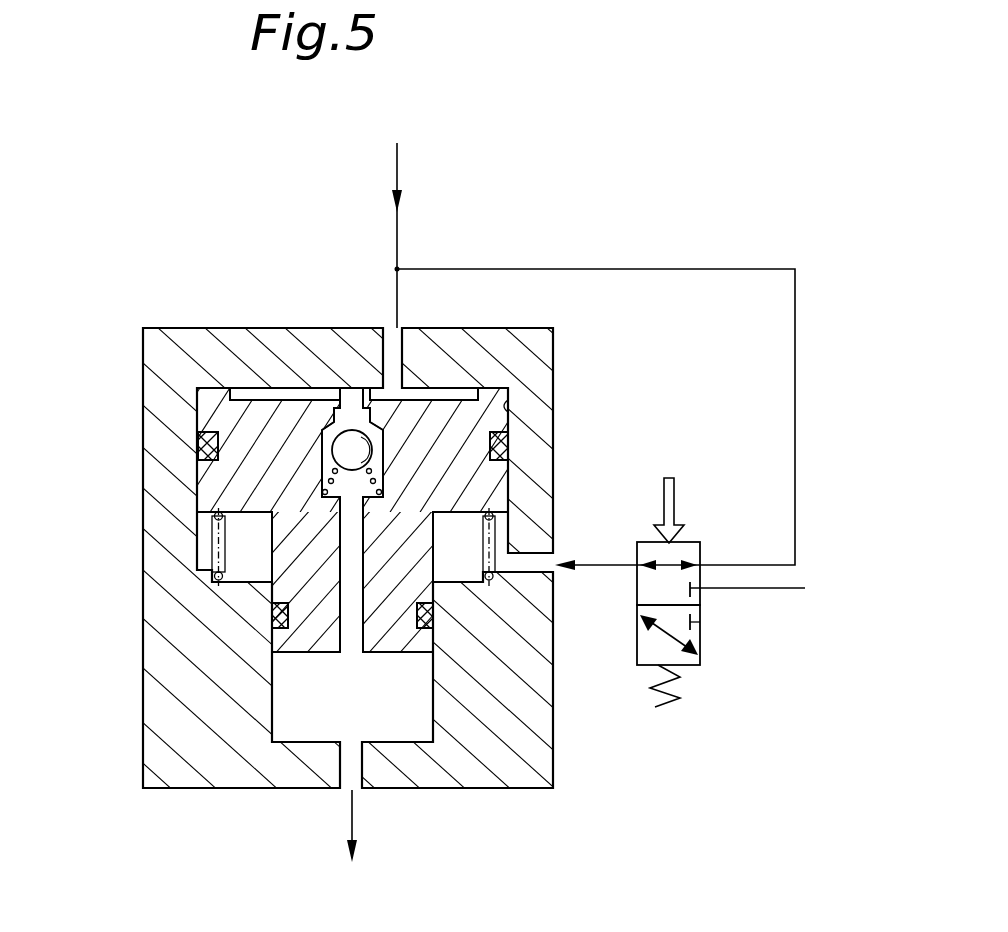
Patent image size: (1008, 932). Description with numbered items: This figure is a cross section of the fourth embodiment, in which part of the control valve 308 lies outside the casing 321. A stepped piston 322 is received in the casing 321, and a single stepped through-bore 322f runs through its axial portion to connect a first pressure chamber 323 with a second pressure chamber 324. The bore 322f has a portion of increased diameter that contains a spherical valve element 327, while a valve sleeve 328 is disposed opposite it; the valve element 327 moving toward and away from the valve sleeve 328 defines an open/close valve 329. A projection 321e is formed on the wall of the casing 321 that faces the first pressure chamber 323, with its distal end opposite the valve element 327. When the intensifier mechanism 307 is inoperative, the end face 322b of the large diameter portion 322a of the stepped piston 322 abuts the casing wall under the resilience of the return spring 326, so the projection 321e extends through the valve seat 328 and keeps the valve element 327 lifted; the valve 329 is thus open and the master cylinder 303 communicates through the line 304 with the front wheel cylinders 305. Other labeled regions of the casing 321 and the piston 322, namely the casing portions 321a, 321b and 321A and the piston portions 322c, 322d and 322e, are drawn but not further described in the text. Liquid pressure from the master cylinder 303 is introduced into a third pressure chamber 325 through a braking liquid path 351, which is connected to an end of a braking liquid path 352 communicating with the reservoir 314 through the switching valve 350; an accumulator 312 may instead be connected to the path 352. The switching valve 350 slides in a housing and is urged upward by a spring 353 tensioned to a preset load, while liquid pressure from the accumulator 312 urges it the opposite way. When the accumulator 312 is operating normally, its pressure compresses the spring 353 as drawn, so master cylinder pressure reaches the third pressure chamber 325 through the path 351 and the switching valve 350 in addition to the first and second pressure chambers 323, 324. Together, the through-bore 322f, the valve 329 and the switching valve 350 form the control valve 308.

The master cylinder 303 is at (398, 130).
The conduit 304 is at (396, 226).
The front wheel cylinders 305 is at (371, 912).
The intensifier mechanism 307 is at (146, 806).
The control valve 308 is at (719, 626).
The accumulator 312 is at (678, 478).
The reservoir 314 is at (799, 574).
The casing 321 is at (152, 316).
The housing port 321a is at (510, 405).
The housing wall 321b is at (273, 702).
The projection 321e is at (322, 392).
The housing port 321A is at (436, 686).
The stepped piston 322 is at (218, 478).
The large diameter portion 322a is at (210, 415).
The end face 322b is at (455, 392).
The seal 322c is at (286, 637).
The chamber 322d is at (310, 654).
The chamber 322e is at (197, 527).
The stepped through-bore 322f is at (350, 618).
The first pressure chamber 323 is at (424, 335).
The second pressure chamber 324 is at (415, 745).
The third pressure chamber 325 is at (233, 582).
The return spring 326 is at (208, 548).
The spherical valve element 327 is at (322, 454).
The valve sleeve 328 is at (385, 438).
The open/close valve 329 is at (316, 420).
The switching valve 350 is at (700, 543).
The braking liquid path 351 is at (690, 268).
The braking liquid path 352 is at (757, 590).
The spring 353 is at (678, 700).